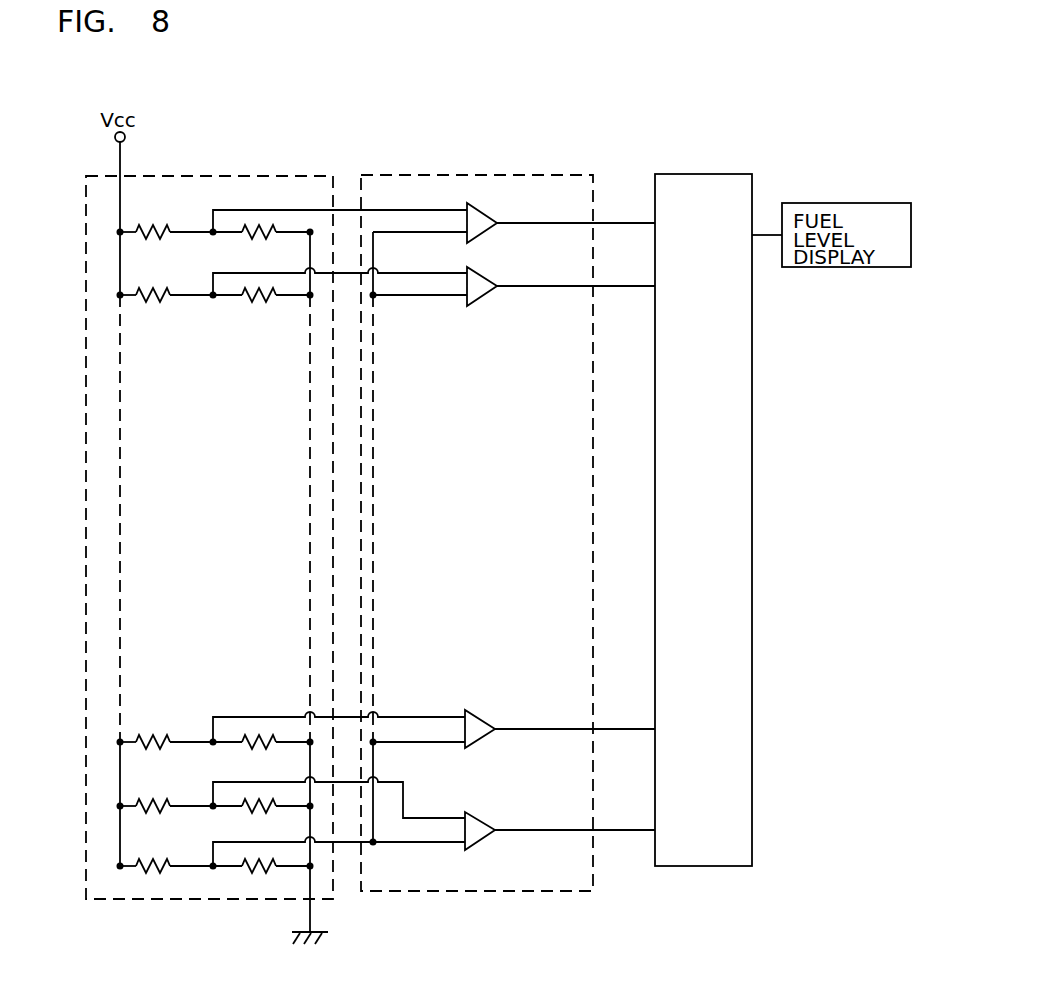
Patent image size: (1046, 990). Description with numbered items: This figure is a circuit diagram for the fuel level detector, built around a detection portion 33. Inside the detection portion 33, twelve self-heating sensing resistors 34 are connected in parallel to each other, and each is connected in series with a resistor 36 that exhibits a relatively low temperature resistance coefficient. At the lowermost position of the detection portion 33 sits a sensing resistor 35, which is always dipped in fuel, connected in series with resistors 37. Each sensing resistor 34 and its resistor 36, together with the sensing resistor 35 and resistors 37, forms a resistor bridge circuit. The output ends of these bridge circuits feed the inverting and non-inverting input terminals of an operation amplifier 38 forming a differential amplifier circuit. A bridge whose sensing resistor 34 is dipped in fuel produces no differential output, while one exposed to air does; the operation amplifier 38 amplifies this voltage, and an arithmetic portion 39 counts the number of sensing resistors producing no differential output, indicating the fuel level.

The detection portion 33 is at (264, 171).
The self-heating sensing resistor 34 is at (137, 243).
The sensing resistor 35 is at (138, 872).
The resistor 36 is at (287, 228).
The resistor 37 is at (242, 883).
The operation amplifier 38 is at (485, 187).
The arithmetic portion 39 is at (680, 188).